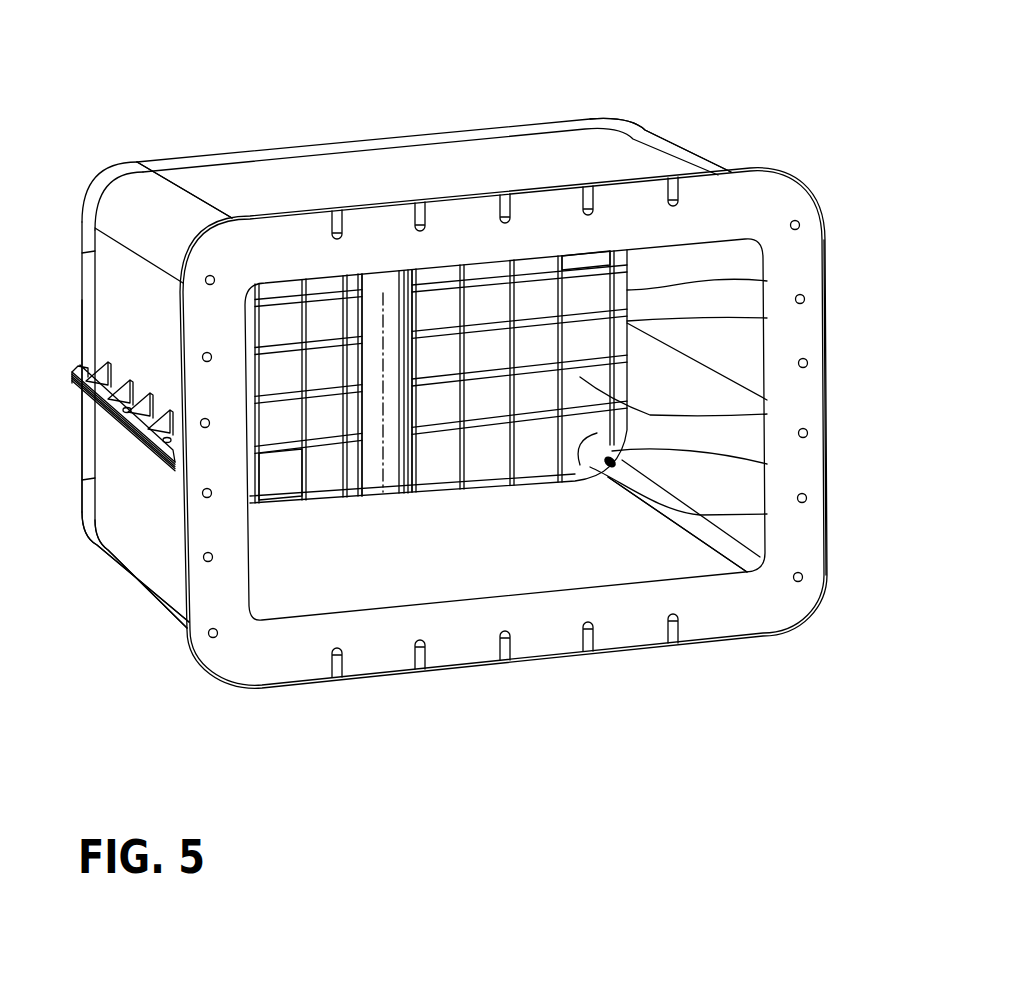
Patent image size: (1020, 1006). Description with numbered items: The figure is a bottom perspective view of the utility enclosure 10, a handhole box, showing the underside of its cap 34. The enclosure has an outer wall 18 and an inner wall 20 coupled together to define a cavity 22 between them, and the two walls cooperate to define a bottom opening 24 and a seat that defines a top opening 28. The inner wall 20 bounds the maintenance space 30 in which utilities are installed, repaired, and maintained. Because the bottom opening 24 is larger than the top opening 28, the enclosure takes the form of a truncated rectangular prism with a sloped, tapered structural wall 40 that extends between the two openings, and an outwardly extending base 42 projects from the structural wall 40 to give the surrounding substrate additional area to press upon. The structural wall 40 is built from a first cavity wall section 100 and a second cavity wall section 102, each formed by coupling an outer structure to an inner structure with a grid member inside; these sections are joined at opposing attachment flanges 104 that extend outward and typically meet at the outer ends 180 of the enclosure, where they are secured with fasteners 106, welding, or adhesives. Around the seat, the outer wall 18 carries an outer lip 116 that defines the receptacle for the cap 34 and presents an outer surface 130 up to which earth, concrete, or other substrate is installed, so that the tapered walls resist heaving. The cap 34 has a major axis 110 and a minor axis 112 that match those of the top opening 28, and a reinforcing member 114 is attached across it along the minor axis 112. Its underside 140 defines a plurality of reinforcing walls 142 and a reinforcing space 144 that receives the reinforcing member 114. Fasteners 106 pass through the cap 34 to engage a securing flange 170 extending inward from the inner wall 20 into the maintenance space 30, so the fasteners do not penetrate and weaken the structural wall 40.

The utility enclosure 10 is at (281, 82).
The outer wall 18 is at (250, 177).
The inner wall 20 is at (575, 560).
The cavity 22 is at (470, 162).
The bottom opening 24 is at (420, 610).
The top opening 28 is at (767, 281).
The maintenance space 30 is at (316, 572).
The cap 34 is at (588, 262).
The structural wall 40 is at (565, 152).
The outwardly extending base 42 is at (183, 632).
The first cavity wall section 100 is at (85, 183).
The second cavity wall section 102 is at (77, 496).
The attachment flanges 104 is at (127, 370).
The fasteners 106 is at (767, 514).
The major axis 110 is at (767, 318).
The minor axis 112 is at (380, 293).
The reinforcing member 114 is at (393, 458).
The outer lip 116 is at (113, 162).
The outer surface 130 is at (162, 505).
The underside 140 is at (273, 497).
The reinforcing walls 142 is at (767, 416).
The reinforcing space 144 is at (360, 507).
The securing flange 170 is at (767, 468).
The outer ends 180 is at (840, 393).